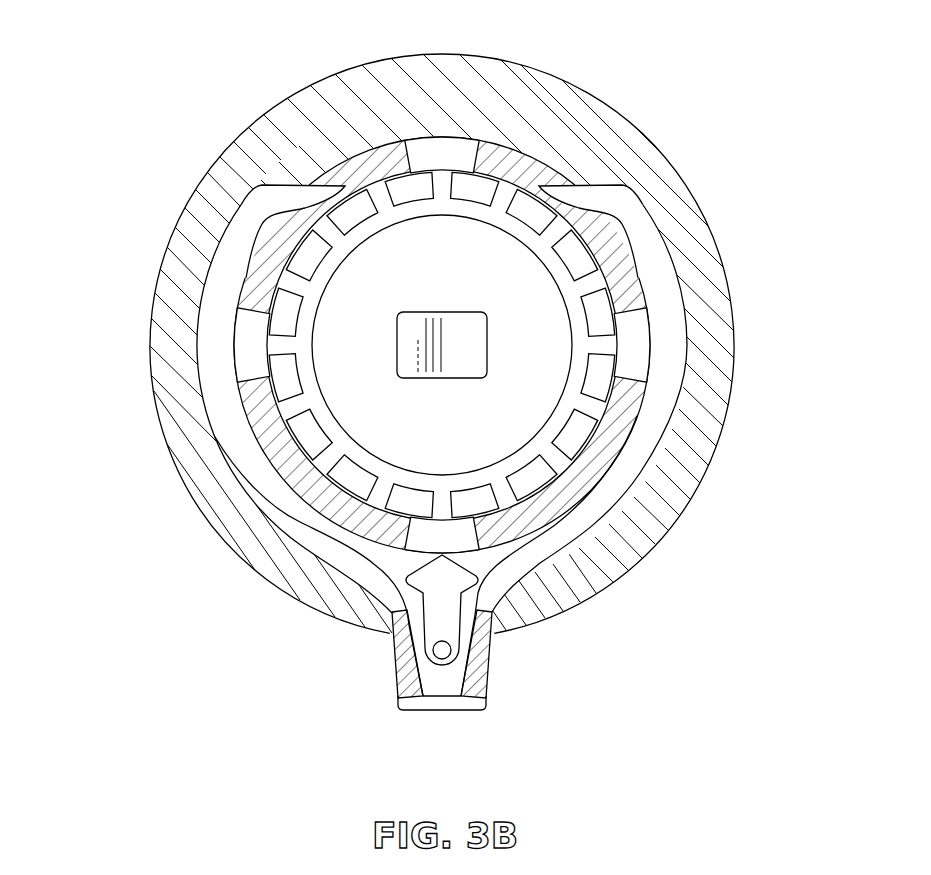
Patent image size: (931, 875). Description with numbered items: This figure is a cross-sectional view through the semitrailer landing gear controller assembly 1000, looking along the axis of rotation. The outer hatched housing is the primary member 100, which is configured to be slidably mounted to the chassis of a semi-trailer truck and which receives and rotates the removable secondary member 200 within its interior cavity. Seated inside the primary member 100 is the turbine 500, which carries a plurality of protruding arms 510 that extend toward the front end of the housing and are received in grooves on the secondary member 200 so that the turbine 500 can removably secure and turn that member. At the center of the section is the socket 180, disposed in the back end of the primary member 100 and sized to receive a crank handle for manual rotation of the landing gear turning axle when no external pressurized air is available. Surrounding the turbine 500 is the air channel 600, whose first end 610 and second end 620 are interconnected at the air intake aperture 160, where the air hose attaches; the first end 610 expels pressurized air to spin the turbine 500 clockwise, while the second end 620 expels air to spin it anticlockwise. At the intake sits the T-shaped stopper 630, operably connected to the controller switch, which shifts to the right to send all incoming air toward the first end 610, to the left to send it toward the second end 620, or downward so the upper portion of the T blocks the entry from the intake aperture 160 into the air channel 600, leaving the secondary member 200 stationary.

The semitrailer landing gear controller assembly 1000 is at (206, 122).
The primary member 100 is at (192, 434).
The air intake aperture 160 is at (397, 655).
The socket 180 is at (450, 343).
The secondary member 200 is at (262, 430).
The turbine 500 is at (292, 258).
The protruding arms 510 is at (447, 150).
The air channel 600 is at (560, 540).
The first end 610 is at (315, 190).
The second end 620 is at (573, 193).
The stopper 630 is at (453, 623).